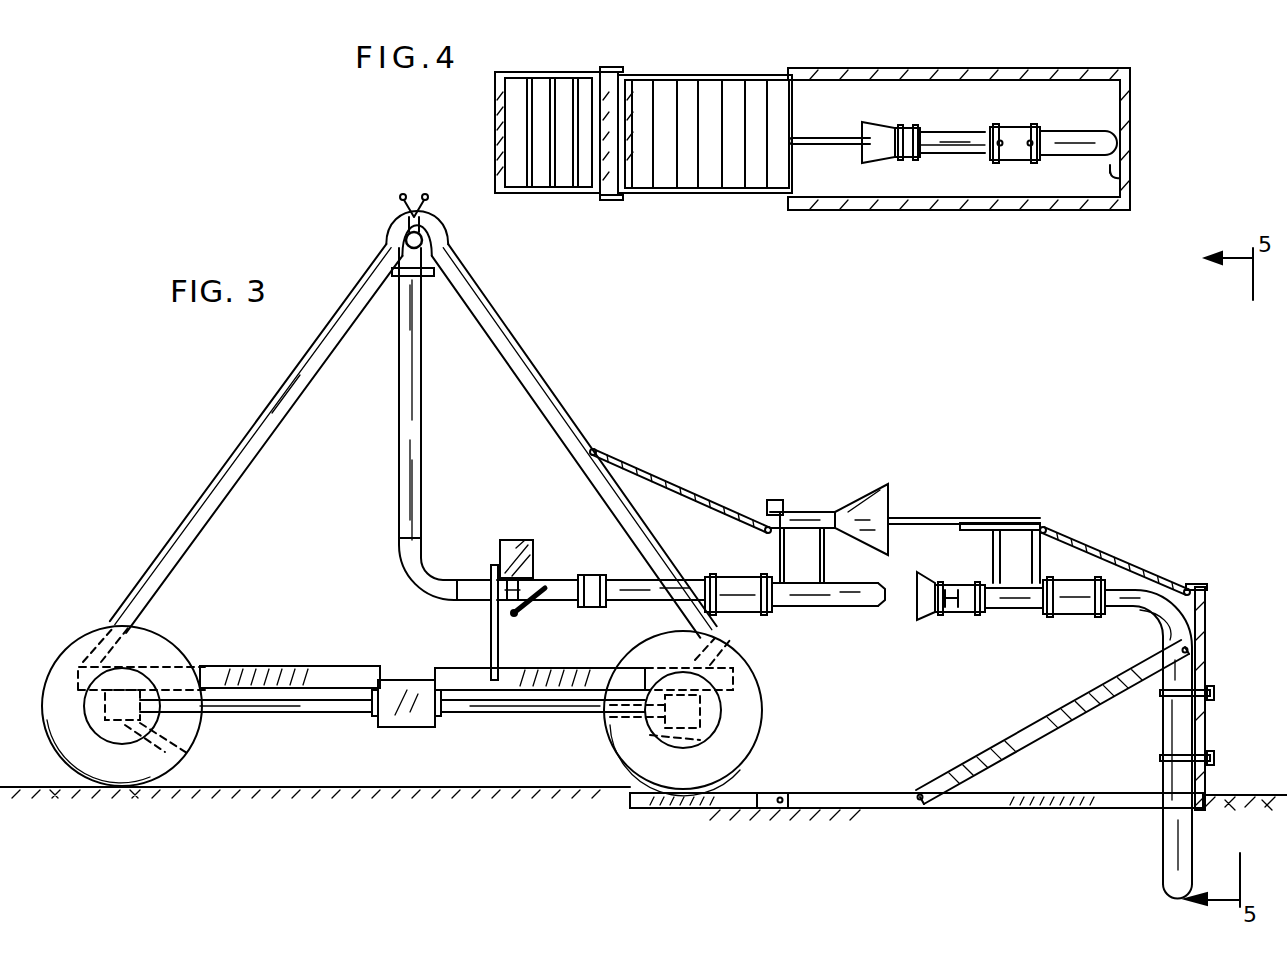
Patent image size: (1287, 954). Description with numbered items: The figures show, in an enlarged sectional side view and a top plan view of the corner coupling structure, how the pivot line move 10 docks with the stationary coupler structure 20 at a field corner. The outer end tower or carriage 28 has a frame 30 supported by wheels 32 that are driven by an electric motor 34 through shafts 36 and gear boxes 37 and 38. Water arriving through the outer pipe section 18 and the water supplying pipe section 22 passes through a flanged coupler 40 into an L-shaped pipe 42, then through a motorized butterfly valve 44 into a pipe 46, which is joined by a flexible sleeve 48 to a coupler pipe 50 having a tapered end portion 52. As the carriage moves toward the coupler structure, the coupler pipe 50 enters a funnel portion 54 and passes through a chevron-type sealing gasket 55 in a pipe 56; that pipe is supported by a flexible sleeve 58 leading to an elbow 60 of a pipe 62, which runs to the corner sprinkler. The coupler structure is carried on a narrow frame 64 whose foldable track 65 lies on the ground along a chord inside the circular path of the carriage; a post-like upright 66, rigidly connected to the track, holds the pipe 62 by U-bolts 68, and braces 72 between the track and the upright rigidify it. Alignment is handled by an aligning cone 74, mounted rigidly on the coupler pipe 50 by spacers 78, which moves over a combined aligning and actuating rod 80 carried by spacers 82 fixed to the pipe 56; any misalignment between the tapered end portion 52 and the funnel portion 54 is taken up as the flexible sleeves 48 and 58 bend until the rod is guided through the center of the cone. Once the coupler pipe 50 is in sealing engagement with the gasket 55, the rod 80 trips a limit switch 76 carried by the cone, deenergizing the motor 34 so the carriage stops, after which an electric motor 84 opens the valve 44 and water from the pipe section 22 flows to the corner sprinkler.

In FIG. 3, the pivot line move 10 is at (336, 194).
In FIG. 3, the outer pipe section 18 is at (437, 197).
In FIG. 3, the stationary coupler structure 20 is at (1125, 523).
In FIG. 3, the water supplying pipe section 22 is at (432, 246).
In FIG. 3, the outer end tower or carriage 28 is at (262, 372).
In FIG. 3, the frame 30 is at (280, 404).
In FIG. 3, the wheels 32 is at (158, 636).
In FIG. 3, the electric motor 34 is at (405, 680).
In FIG. 3, the shafts 36 is at (315, 713).
In FIG. 3, the gear box 37 is at (640, 742).
In FIG. 3, the gear box 38 is at (190, 754).
In FIG. 3, the flanged coupler 40 is at (434, 274).
In FIG. 3, the L-shaped pipe 42 is at (420, 455).
In FIG. 3, the motorized butterfly valve 44 is at (546, 585).
In FIG. 3, the pipe 46 is at (632, 590).
In FIG. 3, the flexible sleeve 48 is at (737, 585).
In FIG. 3, the coupler pipe 50 is at (805, 606).
In FIG. 3, the tapered end portion 52 is at (880, 608).
In FIG. 3, the funnel portion 54 is at (925, 615).
In FIG. 4, the funnel portion 54 is at (872, 126).
In FIG. 3, the chevron-type sealing gasket 55 is at (955, 590).
In FIG. 3, the pipe 56 is at (955, 612).
In FIG. 4, the pipe 56 is at (912, 128).
In FIG. 3, the flexible sleeve 58 is at (1068, 615).
In FIG. 4, the flexible sleeve 58 is at (1010, 128).
In FIG. 3, the elbow 60 is at (1150, 605).
In FIG. 4, the elbow 60 is at (1080, 133).
In FIG. 3, the pipe 62 is at (1197, 672).
In FIG. 3, the narrow frame 64 is at (974, 825).
In FIG. 4, the narrow frame 64 is at (738, 215).
In FIG. 3, the foldable track 65 is at (835, 793).
In FIG. 4, the foldable track 65 is at (718, 76).
In FIG. 3, the post-like upright 66 is at (1199, 648).
In FIG. 4, the post-like upright 66 is at (1133, 115).
In FIG. 3, the U-bolts 68 is at (1168, 757).
In FIG. 4, the U-bolts 68 is at (1115, 176).
In FIG. 3, the braces 72 is at (1000, 745).
In FIG. 4, the braces 72 is at (862, 70).
In FIG. 3, the aligning cone (funnel member) 74 is at (866, 498).
In FIG. 3, the limit switch 76 is at (773, 500).
In FIG. 3, the spacers 78 is at (784, 555).
In FIG. 3, the combined aligning and actuating rod 80 is at (935, 520).
In FIG. 4, the combined aligning and actuating rod 80 is at (828, 138).
In FIG. 3, the spacers 82 is at (1026, 555).
In FIG. 3, the electric motor 84 is at (520, 540).